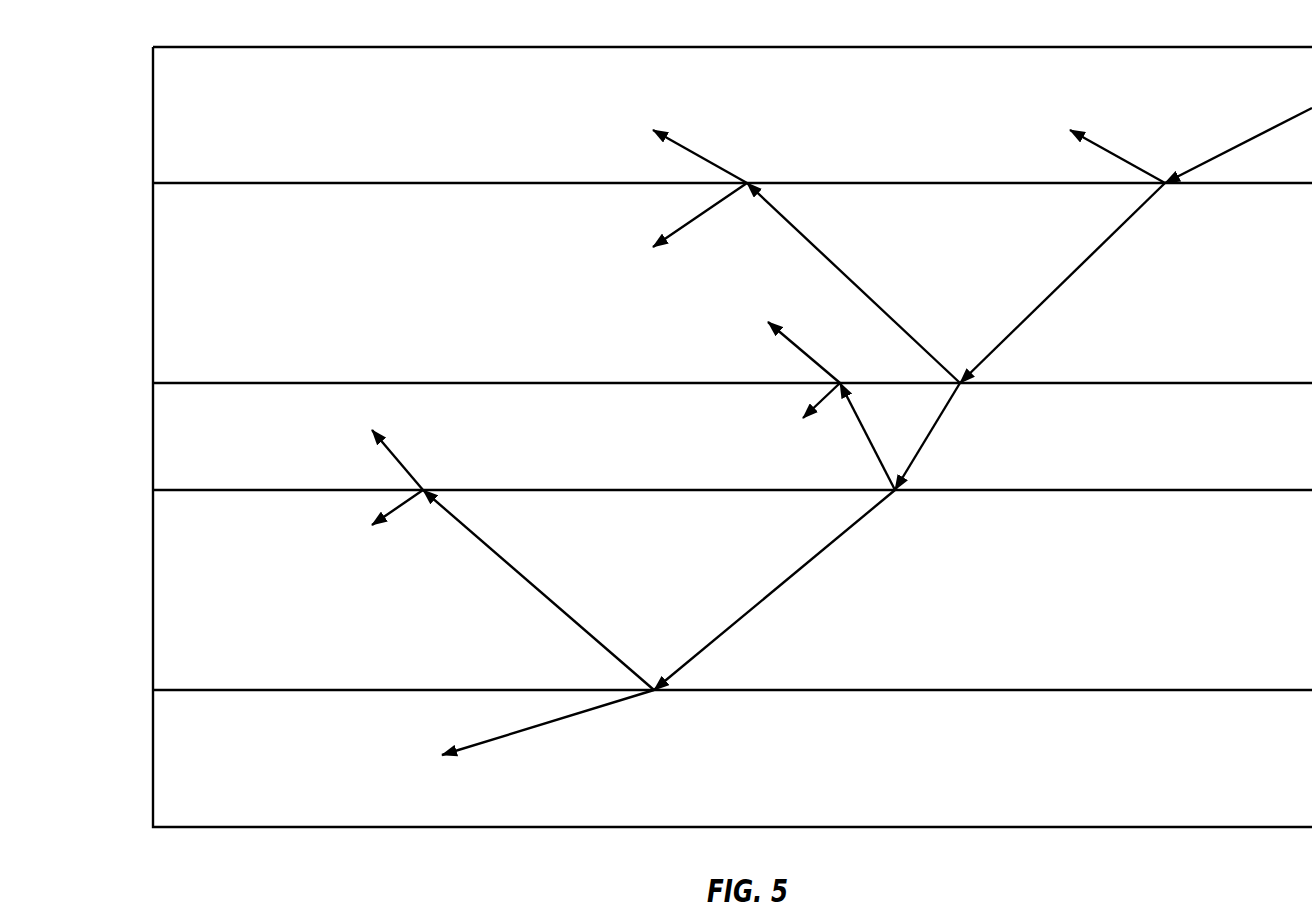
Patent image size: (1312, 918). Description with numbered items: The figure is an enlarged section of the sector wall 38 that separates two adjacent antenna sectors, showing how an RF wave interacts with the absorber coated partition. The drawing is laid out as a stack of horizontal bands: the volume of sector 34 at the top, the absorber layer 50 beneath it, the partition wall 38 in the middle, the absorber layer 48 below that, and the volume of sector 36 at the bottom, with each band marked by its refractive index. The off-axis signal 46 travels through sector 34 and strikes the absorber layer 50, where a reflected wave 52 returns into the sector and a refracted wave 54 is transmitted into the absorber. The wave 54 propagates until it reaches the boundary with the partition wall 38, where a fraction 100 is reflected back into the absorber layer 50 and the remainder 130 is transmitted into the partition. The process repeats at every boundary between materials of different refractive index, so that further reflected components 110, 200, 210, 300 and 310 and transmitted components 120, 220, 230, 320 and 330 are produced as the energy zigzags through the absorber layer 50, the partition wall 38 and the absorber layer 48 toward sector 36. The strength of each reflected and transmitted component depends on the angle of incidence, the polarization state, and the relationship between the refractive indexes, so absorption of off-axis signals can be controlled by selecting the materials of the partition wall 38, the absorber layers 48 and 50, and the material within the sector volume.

The sector 34 is at (153, 112).
The absorber layer 50 is at (153, 280).
The sector wall 38 is at (153, 445).
The absorber layer 48 is at (153, 590).
The sector 36 is at (153, 760).
The off-axis signal 46 is at (1311, 100).
The reflected wave 52 is at (1112, 152).
The refracted wave 54 is at (1067, 280).
The reflected wave fraction 100 is at (813, 243).
The reflected wave component 110 is at (710, 207).
The transmitted wave component 120 is at (710, 158).
The transmitted wave remainder 130 is at (930, 437).
The reflected wave component 200 is at (863, 438).
The reflected wave component 210 is at (820, 405).
The transmitted wave component 220 is at (803, 352).
The transmitted wave component 230 is at (777, 587).
The reflected wave component 300 is at (537, 592).
The reflected wave component 310 is at (395, 510).
The transmitted wave component 320 is at (543, 725).
The transmitted wave component 330 is at (397, 458).